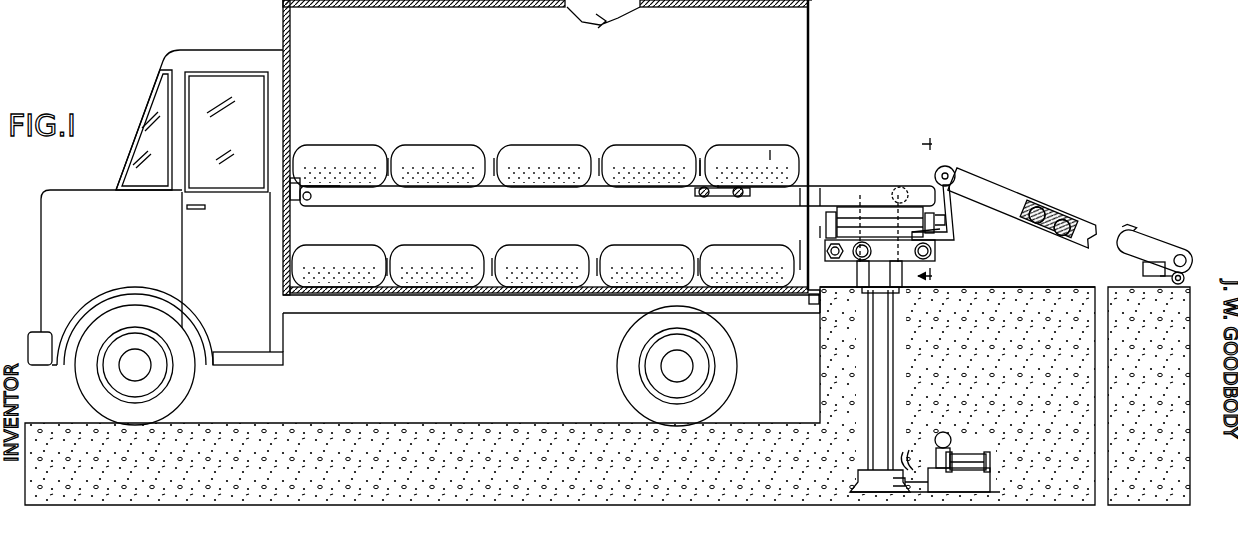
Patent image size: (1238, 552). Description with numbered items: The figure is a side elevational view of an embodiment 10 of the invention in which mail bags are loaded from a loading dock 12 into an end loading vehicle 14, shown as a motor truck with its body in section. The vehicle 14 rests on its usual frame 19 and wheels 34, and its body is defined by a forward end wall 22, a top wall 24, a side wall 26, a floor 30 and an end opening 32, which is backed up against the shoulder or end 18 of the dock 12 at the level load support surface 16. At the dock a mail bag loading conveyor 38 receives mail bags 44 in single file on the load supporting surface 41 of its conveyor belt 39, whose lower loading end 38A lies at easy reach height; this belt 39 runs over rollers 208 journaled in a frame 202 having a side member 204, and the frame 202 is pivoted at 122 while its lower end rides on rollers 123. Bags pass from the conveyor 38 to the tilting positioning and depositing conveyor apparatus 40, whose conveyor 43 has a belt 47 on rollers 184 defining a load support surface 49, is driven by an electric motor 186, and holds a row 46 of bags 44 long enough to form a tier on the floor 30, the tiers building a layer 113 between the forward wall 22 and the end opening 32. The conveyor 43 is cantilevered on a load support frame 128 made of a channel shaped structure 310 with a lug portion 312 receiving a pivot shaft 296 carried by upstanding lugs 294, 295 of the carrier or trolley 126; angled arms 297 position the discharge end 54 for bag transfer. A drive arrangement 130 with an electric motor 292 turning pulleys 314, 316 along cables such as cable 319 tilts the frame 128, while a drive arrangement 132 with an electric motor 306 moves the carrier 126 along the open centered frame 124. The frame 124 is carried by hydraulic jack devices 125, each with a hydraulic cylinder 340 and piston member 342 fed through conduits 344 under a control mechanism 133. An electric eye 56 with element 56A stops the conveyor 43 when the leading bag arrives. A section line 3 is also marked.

The embodiment of the invention 10 is at (1110, 67).
The loading dock 12 is at (607, 252).
The end loading vehicle 14 is at (158, 57).
The level load support surface 16 is at (957, 307).
The shoulder or end 18 is at (816, 305).
The frame 19 is at (397, 317).
The forward end wall 22 is at (580, 181).
The top wall 24 is at (468, 8).
The side wall 26 is at (600, 14).
The floor 30 is at (536, 298).
The end opening 32 is at (816, 44).
The wheels 34 is at (184, 382).
The mail bag loading conveyor 38 is at (1175, 222).
The lower loading end 38A is at (1180, 245).
The conveyor belt 39 is at (1066, 222).
The tilting mail bag positioning and depositing conveyor apparatus 40 is at (917, 144).
The load supporting surface 41 is at (1041, 210).
The conveyor 43 is at (770, 185).
The mail bags 44 is at (335, 292).
The row of mail bags 46 is at (296, 155).
The conveyor belt 47 is at (700, 178).
The load support surface 49 is at (720, 185).
The discharge end 54 is at (938, 168).
The electric eye 56 is at (288, 200).
The electric eye element 56A is at (285, 183).
The layer of tiers 113 is at (770, 296).
The pivot 122 is at (955, 170).
The rollers 123 is at (1165, 290).
The frame 124 is at (938, 251).
The hydraulic jack devices 125 is at (921, 251).
The carrier or trolley 126 is at (819, 232).
The load support frame 128 is at (843, 190).
The drive arrangement 130 is at (854, 266).
The drive arrangement 132 is at (866, 224).
The control mechanism 133 is at (992, 484).
The rollers 184 is at (731, 176).
The electric motor 186 is at (899, 187).
The frame 202 is at (1045, 164).
The side member 204 is at (1001, 184).
The rollers 208 is at (1097, 222).
The electric motor 292 is at (849, 290).
The upstanding lug 294 is at (810, 248).
The upstanding lug 295 is at (955, 236).
The pivot shaft 296 is at (823, 213).
The angled arm 297 is at (1006, 184).
The electric motor 306 is at (831, 9).
The channel shaped structure 310 is at (820, 185).
The lug portion 312 is at (884, 214).
The pulley 314 is at (845, 297).
The pulley 316 is at (905, 272).
The cable 319 is at (952, 232).
The hydraulic cylinder 340 is at (891, 400).
The piston member 342 is at (889, 300).
The conduits 344 is at (913, 448).
The section line 3 is at (939, 210).